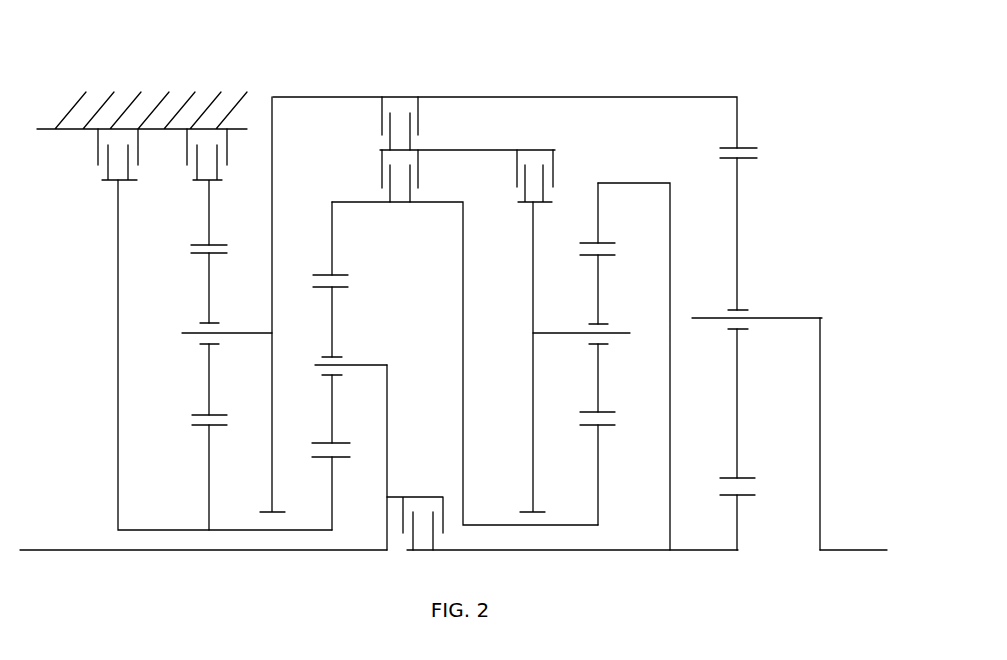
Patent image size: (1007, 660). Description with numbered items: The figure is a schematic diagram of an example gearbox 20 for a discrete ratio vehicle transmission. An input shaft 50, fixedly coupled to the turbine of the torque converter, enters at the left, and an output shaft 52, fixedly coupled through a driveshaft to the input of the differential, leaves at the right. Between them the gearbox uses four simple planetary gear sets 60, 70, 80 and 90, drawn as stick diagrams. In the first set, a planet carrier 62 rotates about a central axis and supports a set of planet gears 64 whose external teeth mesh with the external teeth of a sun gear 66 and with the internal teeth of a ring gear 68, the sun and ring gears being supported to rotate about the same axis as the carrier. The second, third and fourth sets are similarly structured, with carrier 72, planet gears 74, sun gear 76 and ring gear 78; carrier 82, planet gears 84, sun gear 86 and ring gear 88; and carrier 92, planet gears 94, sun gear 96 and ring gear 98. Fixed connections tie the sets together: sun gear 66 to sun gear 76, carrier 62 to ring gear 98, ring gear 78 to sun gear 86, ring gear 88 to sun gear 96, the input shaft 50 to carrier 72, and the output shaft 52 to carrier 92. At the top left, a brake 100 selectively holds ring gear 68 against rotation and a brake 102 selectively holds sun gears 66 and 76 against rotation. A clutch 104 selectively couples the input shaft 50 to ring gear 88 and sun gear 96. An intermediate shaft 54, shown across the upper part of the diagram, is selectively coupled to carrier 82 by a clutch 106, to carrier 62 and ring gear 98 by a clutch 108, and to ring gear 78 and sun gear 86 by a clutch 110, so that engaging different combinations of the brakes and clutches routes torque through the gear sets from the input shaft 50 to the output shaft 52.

The gearbox 20 is at (588, 63).
The input shaft 50 is at (115, 550).
The output shaft 52 is at (862, 550).
The intermediate shaft 54 is at (488, 152).
The planetary gear set 60 is at (190, 370).
The planet carrier 62 is at (272, 215).
The planet gears 64 is at (212, 297).
The sun gear 66 is at (207, 453).
The ring gear 68 is at (206, 218).
The planetary gear set 70 is at (298, 372).
The carrier 72 is at (388, 411).
The planet gears 74 is at (333, 330).
The sun gear 76 is at (333, 483).
The ring gear 78 is at (332, 250).
The planetary gear set 80 is at (522, 425).
The carrier 82 is at (533, 308).
The planet gears 84 is at (600, 298).
The sun gear 86 is at (599, 450).
The ring gear 88 is at (598, 220).
The planetary gear set 90 is at (710, 350).
The carrier 92 is at (803, 318).
The planet gears 94 is at (738, 276).
The sun gear 96 is at (737, 525).
The ring gear 98 is at (737, 128).
The brake 100 is at (187, 145).
The brake 102 is at (98, 145).
The clutch 104 is at (428, 497).
The clutch 106 is at (522, 150).
The clutch 108 is at (380, 130).
The clutch 110 is at (380, 172).